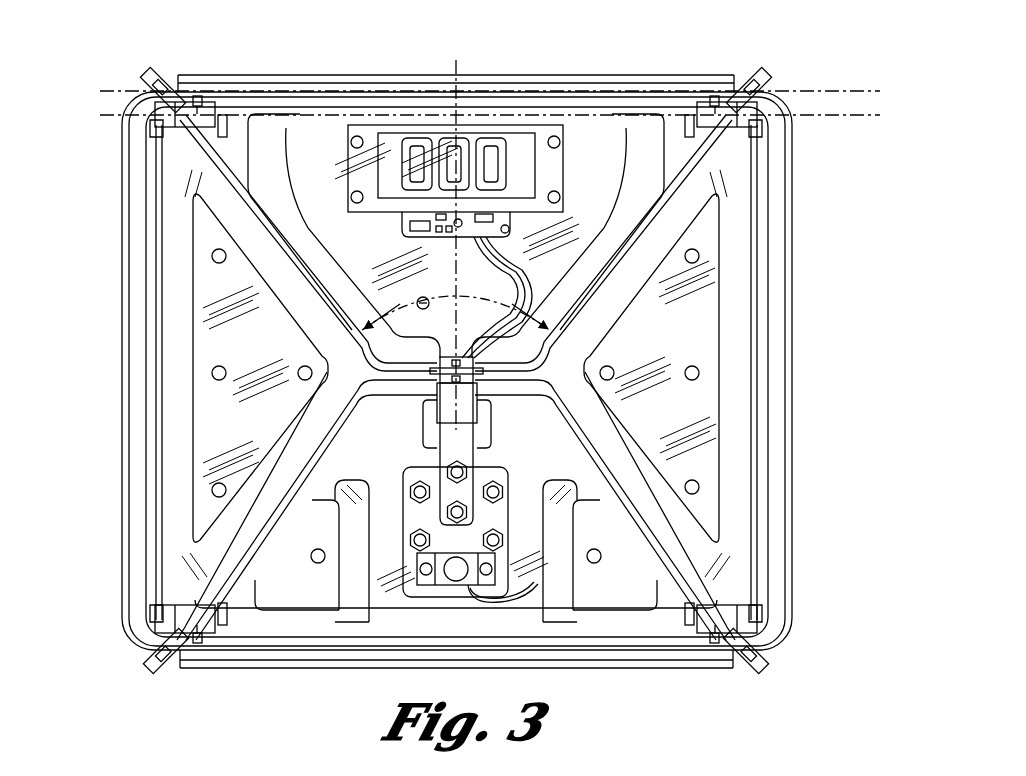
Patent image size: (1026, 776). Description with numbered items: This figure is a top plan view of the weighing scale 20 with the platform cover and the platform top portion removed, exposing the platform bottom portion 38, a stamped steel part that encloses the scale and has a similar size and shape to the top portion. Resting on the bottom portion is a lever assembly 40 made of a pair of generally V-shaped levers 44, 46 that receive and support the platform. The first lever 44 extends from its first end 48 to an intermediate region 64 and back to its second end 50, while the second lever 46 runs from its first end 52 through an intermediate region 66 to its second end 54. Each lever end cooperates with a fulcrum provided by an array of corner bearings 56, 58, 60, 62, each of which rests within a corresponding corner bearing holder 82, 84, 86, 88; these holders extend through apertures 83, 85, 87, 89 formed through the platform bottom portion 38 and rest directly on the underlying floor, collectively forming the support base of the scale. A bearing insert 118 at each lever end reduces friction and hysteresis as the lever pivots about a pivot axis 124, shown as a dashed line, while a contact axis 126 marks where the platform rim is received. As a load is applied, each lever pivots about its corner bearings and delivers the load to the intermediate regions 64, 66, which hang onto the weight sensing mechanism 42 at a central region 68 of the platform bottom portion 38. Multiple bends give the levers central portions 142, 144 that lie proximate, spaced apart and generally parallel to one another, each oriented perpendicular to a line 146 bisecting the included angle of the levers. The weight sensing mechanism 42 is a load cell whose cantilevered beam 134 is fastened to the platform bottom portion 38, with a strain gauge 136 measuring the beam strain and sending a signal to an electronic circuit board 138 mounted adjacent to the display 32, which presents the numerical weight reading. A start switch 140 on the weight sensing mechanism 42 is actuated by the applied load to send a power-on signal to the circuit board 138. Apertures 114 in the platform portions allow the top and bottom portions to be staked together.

The weighing scale 20 is at (614, 42).
The display 32 is at (372, 126).
The platform bottom portion 38 is at (270, 76).
The lever assembly 40 is at (234, 158).
The weight sensing mechanism 42 is at (483, 395).
The first lever 44 is at (676, 110).
The second lever 46 is at (680, 577).
The first end of first lever 48 is at (174, 92).
The second end of first lever 50 is at (748, 92).
The first end of second lever 52 is at (158, 665).
The second end of second lever 54 is at (762, 670).
The first corner bearing 56 is at (196, 98).
The second corner bearing 58 is at (718, 98).
The third corner bearing 60 is at (197, 645).
The fourth corner bearing 62 is at (718, 645).
The intermediate region of first lever 64 is at (375, 343).
The intermediate region of second lever 66 is at (432, 408).
The central region of platform bottom portion 68 is at (490, 375).
The first corner bearing holder 82 is at (222, 112).
The aperture 83 is at (156, 134).
The second corner bearing holder 84 is at (692, 117).
The aperture 85 is at (758, 138).
The third corner bearing holder 86 is at (222, 627).
The aperture 87 is at (190, 595).
The fourth corner bearing holder 88 is at (767, 632).
The aperture 89 is at (487, 413).
The aperture 114 is at (212, 257).
The bearing insert 118 is at (156, 80).
The pivot axis 124 is at (808, 117).
The contact axis 126 is at (833, 90).
The cantilevered beam 134 is at (478, 383).
The strain gauge 136 is at (480, 420).
The electronic circuit board 138 is at (510, 228).
The start switch 140 is at (447, 590).
The central portion of first lever 142 is at (574, 371).
The central portion of second lever 144 is at (487, 405).
The bisecting line 146 is at (460, 62).